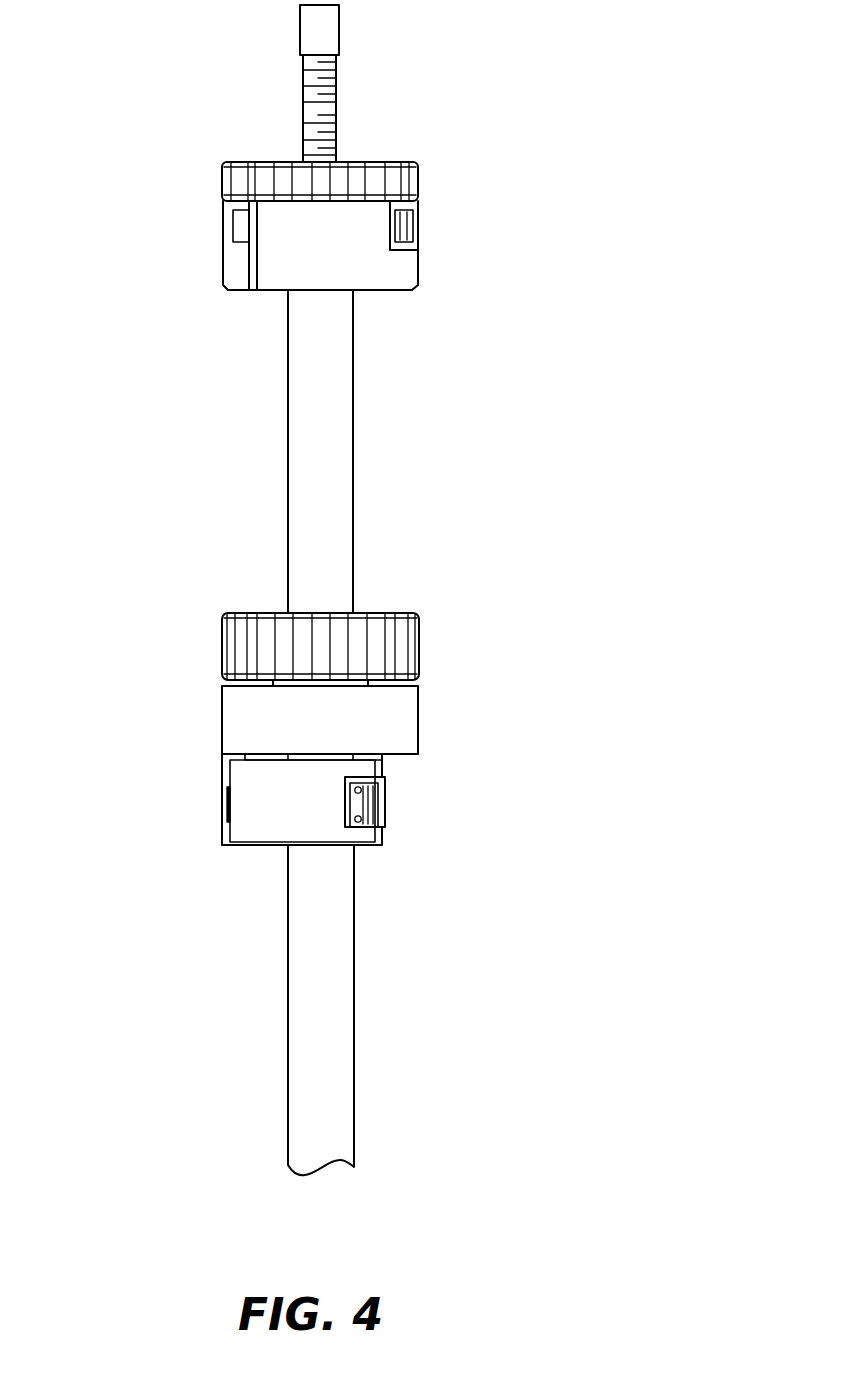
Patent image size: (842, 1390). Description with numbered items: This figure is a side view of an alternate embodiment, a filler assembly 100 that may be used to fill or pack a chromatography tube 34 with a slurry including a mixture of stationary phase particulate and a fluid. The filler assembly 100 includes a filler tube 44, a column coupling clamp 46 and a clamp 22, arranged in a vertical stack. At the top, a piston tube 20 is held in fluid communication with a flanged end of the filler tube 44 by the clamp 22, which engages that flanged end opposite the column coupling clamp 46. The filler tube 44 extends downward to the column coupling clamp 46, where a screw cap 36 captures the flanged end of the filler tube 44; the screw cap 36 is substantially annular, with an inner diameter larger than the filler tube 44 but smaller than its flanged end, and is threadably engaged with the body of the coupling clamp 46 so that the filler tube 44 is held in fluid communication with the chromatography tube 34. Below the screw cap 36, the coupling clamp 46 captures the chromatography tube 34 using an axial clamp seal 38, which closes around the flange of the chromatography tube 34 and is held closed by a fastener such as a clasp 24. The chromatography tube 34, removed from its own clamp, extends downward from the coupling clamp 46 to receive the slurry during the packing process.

The filler assembly 100 is at (157, 75).
The piston tube 20 is at (350, 115).
The clamp 22 is at (412, 270).
The filler tube 44 is at (348, 415).
The column coupling clamp 46 is at (157, 618).
The screw cap 36 is at (405, 648).
The axial clamp seal 38 is at (243, 773).
The clasp 24 is at (372, 804).
The chromatography tube 34 is at (348, 978).